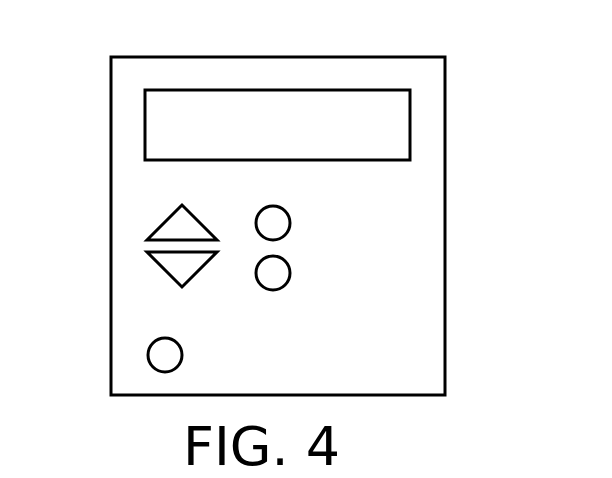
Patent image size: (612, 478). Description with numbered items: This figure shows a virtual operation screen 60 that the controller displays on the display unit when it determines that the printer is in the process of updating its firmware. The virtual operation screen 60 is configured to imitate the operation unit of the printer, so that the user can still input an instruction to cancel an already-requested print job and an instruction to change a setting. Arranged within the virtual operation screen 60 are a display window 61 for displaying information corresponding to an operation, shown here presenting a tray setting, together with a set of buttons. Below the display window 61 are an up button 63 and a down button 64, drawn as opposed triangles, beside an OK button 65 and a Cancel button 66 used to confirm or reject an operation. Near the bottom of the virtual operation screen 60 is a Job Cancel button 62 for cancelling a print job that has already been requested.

The virtual operation screen 60 is at (272, 57).
The display window 61 is at (412, 118).
The Job Cancel button 62 is at (147, 356).
The up button 63 is at (152, 231).
The down button 64 is at (160, 265).
The OK button 65 is at (284, 207).
The Cancel button 66 is at (286, 287).